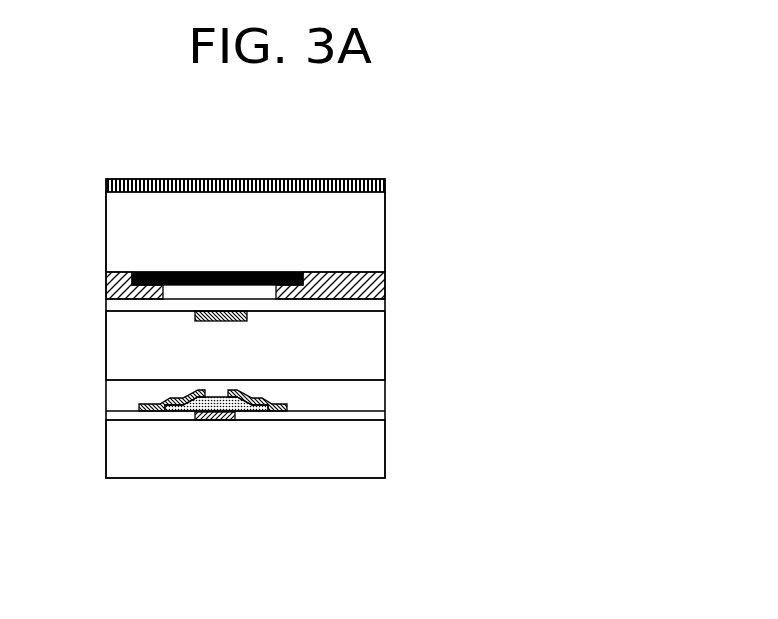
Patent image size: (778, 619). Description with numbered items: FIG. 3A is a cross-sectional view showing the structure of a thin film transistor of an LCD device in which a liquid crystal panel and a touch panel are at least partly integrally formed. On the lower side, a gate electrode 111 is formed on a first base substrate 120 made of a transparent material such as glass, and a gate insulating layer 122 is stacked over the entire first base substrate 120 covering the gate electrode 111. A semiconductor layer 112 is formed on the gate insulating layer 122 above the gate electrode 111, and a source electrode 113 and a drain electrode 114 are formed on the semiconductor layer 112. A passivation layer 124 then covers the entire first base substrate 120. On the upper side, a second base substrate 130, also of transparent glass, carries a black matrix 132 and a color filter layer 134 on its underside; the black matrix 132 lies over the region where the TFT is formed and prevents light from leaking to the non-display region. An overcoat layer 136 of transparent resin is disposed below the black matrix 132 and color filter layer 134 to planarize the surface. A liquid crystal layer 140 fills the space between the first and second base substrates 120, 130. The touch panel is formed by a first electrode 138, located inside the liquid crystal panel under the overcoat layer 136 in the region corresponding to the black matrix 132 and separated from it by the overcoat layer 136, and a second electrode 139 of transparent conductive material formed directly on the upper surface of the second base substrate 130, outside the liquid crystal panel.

The gate electrode 111 is at (219, 421).
The semiconductor layer 112 is at (176, 412).
The source electrode 113 is at (152, 411).
The drain electrode 114 is at (277, 412).
The first base substrate 120 is at (377, 454).
The gate insulating layer 122 is at (377, 418).
The passivation layer 124 is at (377, 391).
The second base substrate 130 is at (377, 233).
The black matrix 132 is at (196, 272).
The color filter layer 134 is at (385, 277).
The overcoat layer 136 is at (377, 304).
The first electrode 138 is at (196, 316).
The second electrode 139 is at (385, 184).
The liquid crystal layer 140 is at (377, 347).